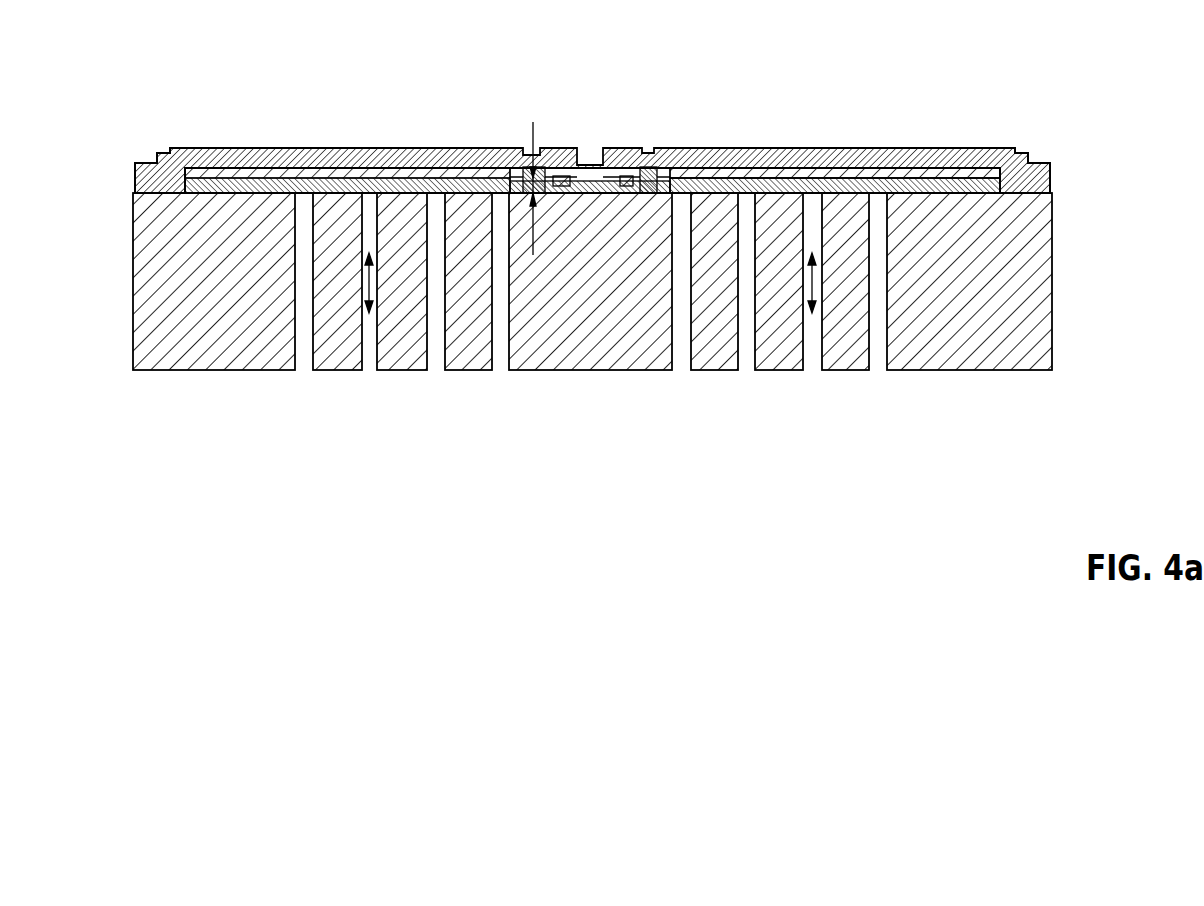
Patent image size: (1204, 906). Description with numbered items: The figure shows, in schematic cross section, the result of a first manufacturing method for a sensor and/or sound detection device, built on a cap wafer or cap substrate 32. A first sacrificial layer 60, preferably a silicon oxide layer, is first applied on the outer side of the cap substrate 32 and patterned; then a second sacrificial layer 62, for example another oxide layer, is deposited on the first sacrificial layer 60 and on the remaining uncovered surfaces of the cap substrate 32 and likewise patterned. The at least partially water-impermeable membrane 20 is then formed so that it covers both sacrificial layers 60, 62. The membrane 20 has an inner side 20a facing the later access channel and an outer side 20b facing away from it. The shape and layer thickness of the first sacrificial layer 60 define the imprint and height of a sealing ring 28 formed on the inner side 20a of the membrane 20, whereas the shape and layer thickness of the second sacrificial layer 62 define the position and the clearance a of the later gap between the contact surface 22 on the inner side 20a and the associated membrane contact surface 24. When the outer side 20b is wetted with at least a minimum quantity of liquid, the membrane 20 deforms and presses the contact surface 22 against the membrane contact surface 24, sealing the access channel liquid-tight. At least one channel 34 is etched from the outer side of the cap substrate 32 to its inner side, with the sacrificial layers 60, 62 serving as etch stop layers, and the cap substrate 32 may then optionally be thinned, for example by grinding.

The membrane 20 is at (876, 152).
The inner side of the membrane 20a is at (204, 156).
The outer side of the membrane 20b is at (805, 148).
The second sacrificial layer 62 is at (334, 156).
The contact surface 22 is at (676, 158).
The first sacrificial layer 60 is at (748, 156).
The sealing ring 28 is at (520, 172).
The membrane contact surface 24 is at (642, 155).
The clearance of the gap a is at (530, 148).
The cap wafer/cap substrate 32 is at (1077, 192).
The channel 34 is at (366, 283).